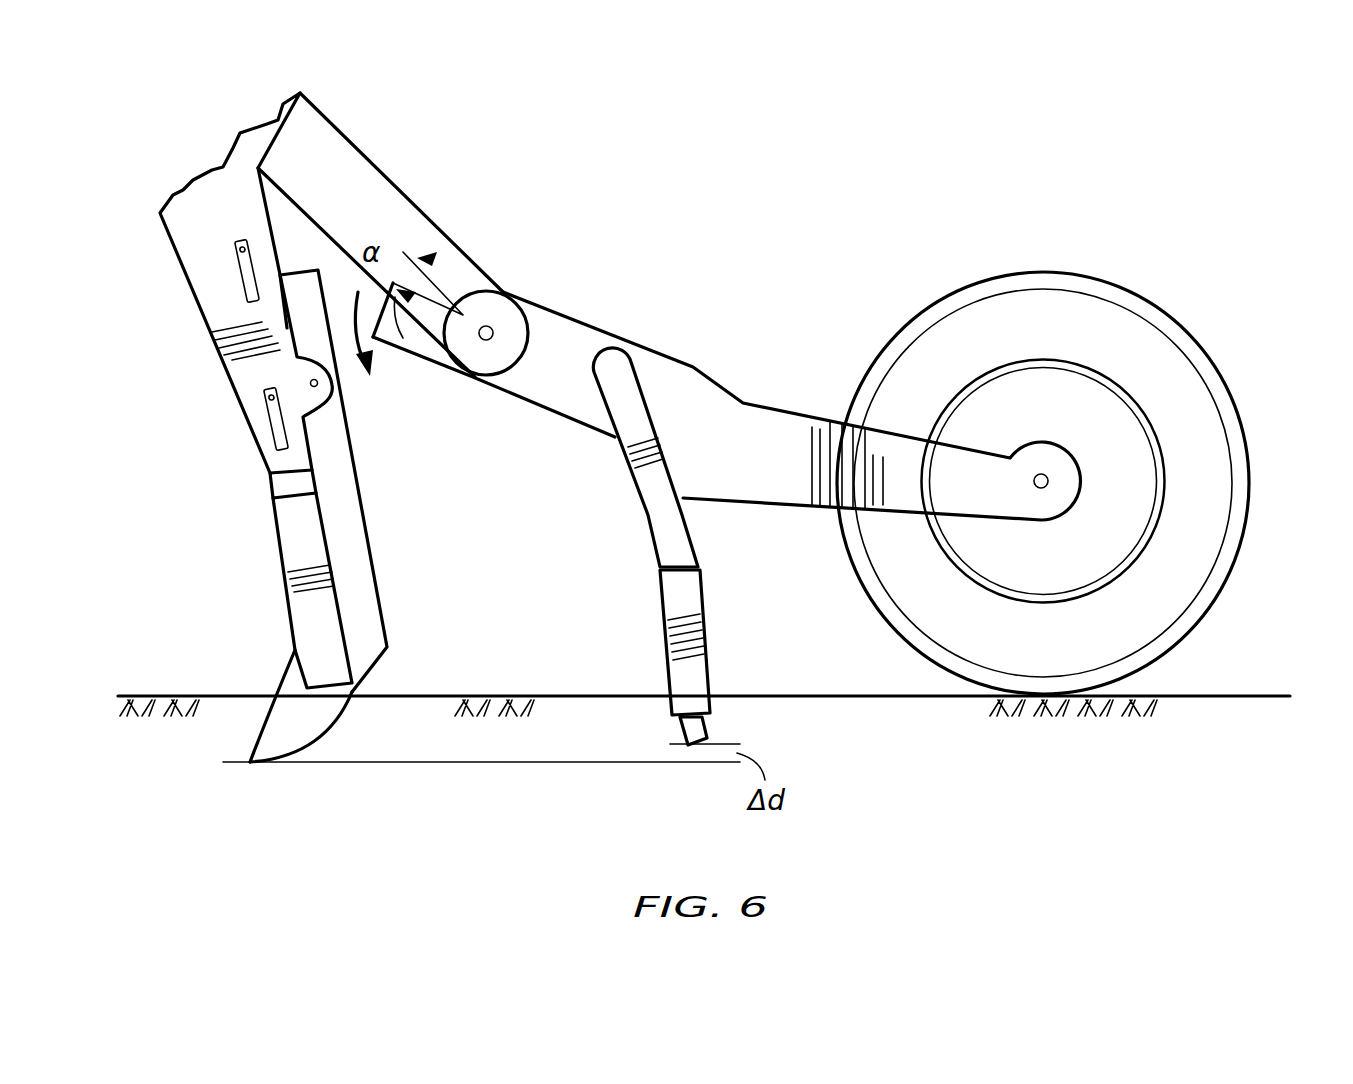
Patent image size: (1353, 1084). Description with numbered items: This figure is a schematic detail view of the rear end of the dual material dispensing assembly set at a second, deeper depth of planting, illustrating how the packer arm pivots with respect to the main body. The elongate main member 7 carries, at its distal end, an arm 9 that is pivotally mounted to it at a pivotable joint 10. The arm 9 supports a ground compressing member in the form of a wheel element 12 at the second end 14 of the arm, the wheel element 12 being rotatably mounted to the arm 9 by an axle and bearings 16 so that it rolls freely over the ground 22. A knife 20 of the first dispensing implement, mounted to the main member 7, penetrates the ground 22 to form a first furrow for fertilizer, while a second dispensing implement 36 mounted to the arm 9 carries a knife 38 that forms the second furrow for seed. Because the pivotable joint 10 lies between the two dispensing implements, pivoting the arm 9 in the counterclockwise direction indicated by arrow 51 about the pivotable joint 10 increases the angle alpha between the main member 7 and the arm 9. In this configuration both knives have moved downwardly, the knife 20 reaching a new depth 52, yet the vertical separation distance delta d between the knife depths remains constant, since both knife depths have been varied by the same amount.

The elongate main member 7 is at (332, 162).
The arm 9 is at (547, 335).
The pivotable joint 10 is at (492, 326).
The wheel element 12 is at (955, 322).
The second end of the arm 14 is at (1075, 479).
The axle and bearings 16 is at (1049, 486).
The knife 20 is at (278, 737).
The ground 22 is at (883, 698).
The second dispensing implement 36 is at (707, 607).
The knife 38 is at (688, 732).
The arrow 51 is at (338, 481).
The depth 52 is at (374, 766).